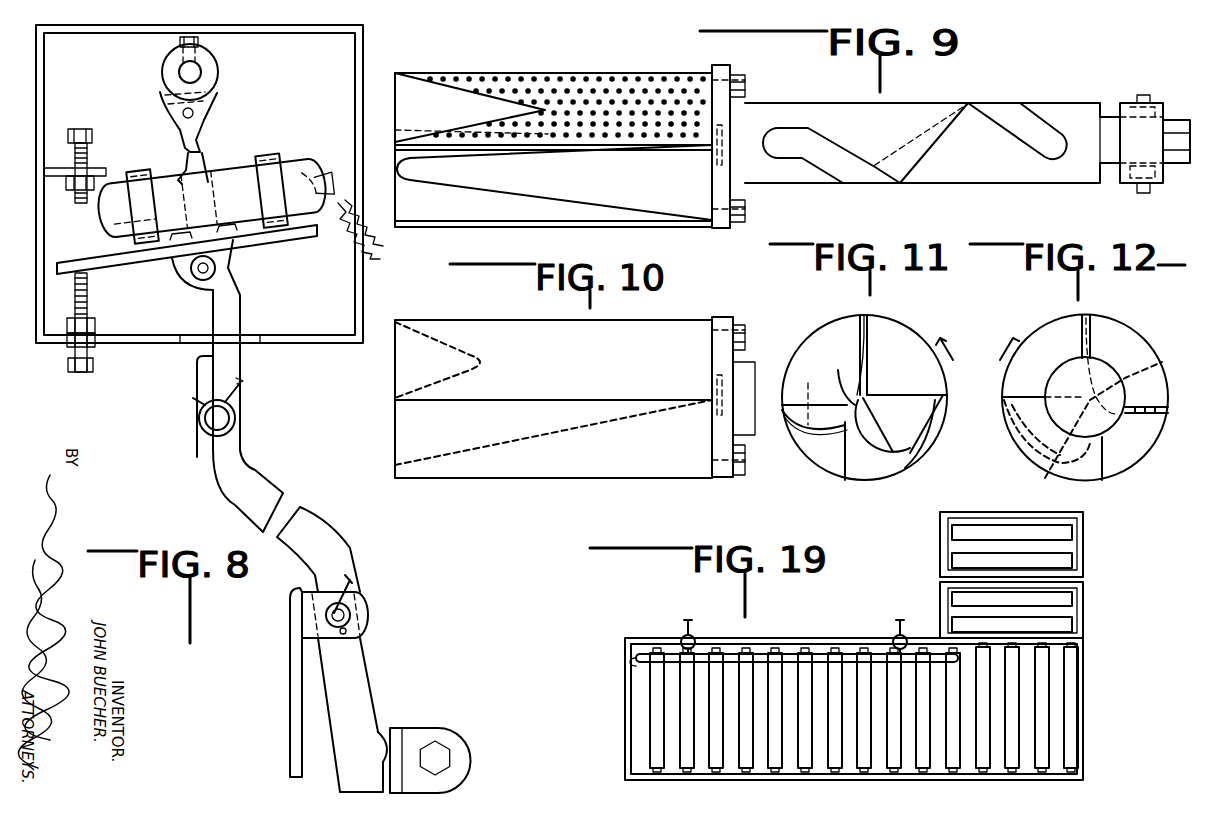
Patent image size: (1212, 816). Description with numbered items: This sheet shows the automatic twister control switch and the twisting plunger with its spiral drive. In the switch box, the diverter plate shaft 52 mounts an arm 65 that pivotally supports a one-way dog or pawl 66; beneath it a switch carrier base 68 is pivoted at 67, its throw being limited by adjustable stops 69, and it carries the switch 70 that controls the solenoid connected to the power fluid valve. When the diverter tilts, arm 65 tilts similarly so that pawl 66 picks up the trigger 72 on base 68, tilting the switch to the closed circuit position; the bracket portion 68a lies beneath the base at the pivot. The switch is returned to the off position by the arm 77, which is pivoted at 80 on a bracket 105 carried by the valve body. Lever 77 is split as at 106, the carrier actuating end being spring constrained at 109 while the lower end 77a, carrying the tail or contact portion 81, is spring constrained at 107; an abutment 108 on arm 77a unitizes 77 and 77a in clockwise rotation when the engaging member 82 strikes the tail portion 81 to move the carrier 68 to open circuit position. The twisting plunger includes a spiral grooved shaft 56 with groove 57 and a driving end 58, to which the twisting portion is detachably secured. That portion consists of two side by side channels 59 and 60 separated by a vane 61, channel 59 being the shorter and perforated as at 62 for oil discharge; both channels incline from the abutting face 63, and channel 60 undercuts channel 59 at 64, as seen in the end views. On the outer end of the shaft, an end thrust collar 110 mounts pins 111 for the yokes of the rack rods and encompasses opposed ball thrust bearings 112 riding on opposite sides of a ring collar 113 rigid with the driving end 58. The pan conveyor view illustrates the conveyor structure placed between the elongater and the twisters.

In FIG. 8, the shaft 52 is at (182, 70).
In FIG. 8, the arm 65 is at (212, 80).
In FIG. 8, the one-way dog or pawl 66 is at (180, 128).
In FIG. 8, the adjustable stops 69 is at (93, 163).
In FIG. 8, the trigger 72 is at (203, 173).
In FIG. 8, the switch 70 is at (307, 180).
In FIG. 8, the switch carrier base 68 is at (283, 234).
In FIG. 8, the bracket 68a is at (230, 268).
In FIG. 8, the pivot 67 is at (201, 274).
In FIG. 8, the arm 77 is at (230, 322).
In FIG. 8, the abutment 108 is at (205, 373).
In FIG. 8, the spring constraint 109 is at (246, 381).
In FIG. 8, the split 106 is at (215, 418).
In FIG. 8, the spring constraint 107 is at (353, 578).
In FIG. 8, the pivot 80 is at (350, 613).
In FIG. 8, the lower end of arm 77a is at (357, 672).
In FIG. 8, the bracket 105 is at (297, 657).
In FIG. 8, the tail portion 81 is at (383, 738).
In FIG. 8, the engaging member 82 is at (398, 743).
In FIG. 9, the abutting face 63 is at (390, 95).
In FIG. 10, the abutting face 63 is at (395, 428).
In FIG. 9, the perforations 62 is at (472, 80).
In FIG. 11, the perforations 62 is at (814, 401).
In FIG. 12, the perforations 62 is at (1166, 356).
In FIG. 9, the channel 59 is at (530, 78).
In FIG. 10, the channel 59 is at (456, 340).
In FIG. 11, the channel 59 is at (842, 376).
In FIG. 9, the channel 60 is at (508, 193).
In FIG. 10, the channel 60 is at (500, 432).
In FIG. 11, the channel 60 is at (913, 462).
In FIG. 12, the channel 60 is at (1054, 476).
In FIG. 9, the spiral grooved shaft 56 is at (1050, 113).
In FIG. 9, the groove 57 is at (1025, 120).
In FIG. 9, the driving end 58 is at (1110, 127).
In FIG. 9, the end thrust collar 110 is at (1130, 186).
In FIG. 9, the pins 111 is at (1143, 94).
In FIG. 9, the ball thrust bearings 112 is at (1157, 178).
In FIG. 9, the ring collar 113 is at (1118, 168).
In FIG. 11, the vane 61 is at (869, 376).
In FIG. 12, the vane 61 is at (1091, 350).
In FIG. 11, the undercut 64 is at (860, 408).